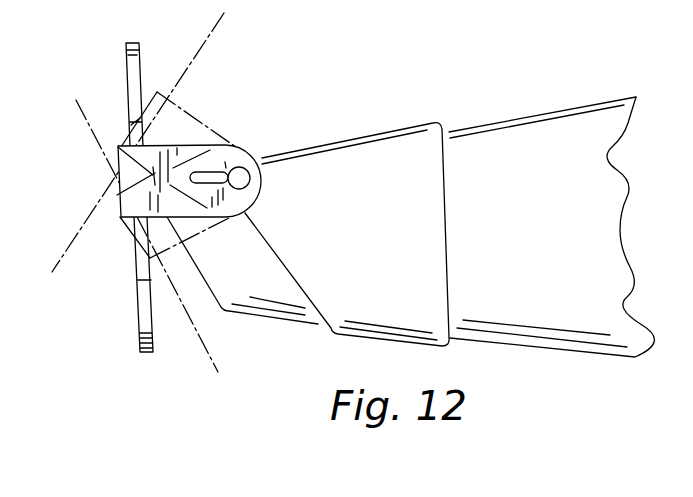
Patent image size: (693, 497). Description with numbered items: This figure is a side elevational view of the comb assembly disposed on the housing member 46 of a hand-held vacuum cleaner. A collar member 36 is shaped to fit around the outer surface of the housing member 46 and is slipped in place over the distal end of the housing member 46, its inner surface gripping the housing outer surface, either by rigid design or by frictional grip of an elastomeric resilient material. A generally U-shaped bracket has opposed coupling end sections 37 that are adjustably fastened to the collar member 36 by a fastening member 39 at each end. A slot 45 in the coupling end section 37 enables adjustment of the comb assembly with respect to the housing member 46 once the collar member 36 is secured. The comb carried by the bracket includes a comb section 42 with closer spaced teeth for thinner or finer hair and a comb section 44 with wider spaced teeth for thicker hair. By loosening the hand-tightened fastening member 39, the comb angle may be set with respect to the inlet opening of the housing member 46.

The collar member 36 is at (388, 252).
The coupling end section 37 is at (214, 152).
The fastening member 39 is at (262, 160).
The comb section 42 is at (138, 321).
The comb section 44 is at (126, 59).
The slot 45 is at (216, 170).
The housing member 46 is at (558, 254).